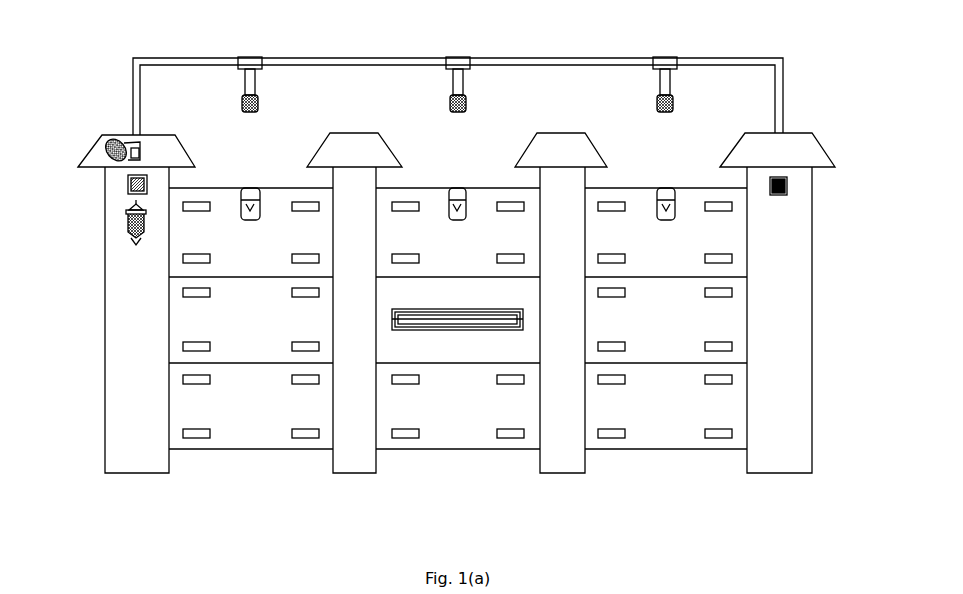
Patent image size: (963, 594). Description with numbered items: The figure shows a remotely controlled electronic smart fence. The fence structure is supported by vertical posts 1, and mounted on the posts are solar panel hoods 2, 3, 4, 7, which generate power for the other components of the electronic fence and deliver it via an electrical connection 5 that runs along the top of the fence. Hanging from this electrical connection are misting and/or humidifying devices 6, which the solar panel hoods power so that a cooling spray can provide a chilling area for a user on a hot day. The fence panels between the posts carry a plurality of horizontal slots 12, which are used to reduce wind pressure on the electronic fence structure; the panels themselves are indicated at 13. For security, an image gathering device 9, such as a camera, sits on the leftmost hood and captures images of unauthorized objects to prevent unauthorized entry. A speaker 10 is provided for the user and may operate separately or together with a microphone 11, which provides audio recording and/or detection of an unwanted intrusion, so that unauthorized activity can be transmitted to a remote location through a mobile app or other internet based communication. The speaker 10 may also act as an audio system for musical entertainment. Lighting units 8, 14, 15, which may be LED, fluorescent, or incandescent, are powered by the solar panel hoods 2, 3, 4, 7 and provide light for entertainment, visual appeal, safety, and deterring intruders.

The vertical post 1 is at (103, 322).
The solar panel hood 2 is at (831, 148).
The solar panel hood 3 is at (398, 147).
The solar panel hood 4 is at (603, 147).
The electrical connection 5 is at (727, 55).
The misting and/or humidifying device 6 is at (679, 103).
The solar panel hood 7 is at (87, 145).
The lighting unit 8 is at (438, 333).
The image gathering device 9 is at (117, 146).
The speaker 10 is at (126, 183).
The microphone 11 is at (791, 186).
The horizontal slot 12 is at (299, 452).
The panel 13 is at (285, 186).
The lighting unit 14 is at (250, 186).
The lighting unit 15 is at (124, 227).